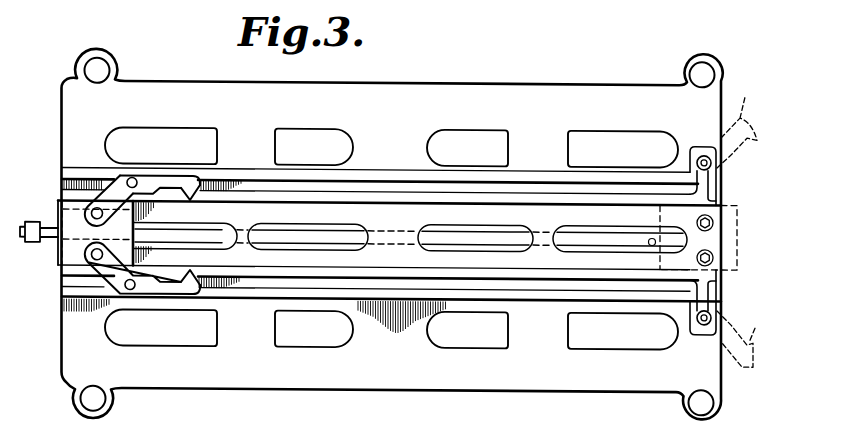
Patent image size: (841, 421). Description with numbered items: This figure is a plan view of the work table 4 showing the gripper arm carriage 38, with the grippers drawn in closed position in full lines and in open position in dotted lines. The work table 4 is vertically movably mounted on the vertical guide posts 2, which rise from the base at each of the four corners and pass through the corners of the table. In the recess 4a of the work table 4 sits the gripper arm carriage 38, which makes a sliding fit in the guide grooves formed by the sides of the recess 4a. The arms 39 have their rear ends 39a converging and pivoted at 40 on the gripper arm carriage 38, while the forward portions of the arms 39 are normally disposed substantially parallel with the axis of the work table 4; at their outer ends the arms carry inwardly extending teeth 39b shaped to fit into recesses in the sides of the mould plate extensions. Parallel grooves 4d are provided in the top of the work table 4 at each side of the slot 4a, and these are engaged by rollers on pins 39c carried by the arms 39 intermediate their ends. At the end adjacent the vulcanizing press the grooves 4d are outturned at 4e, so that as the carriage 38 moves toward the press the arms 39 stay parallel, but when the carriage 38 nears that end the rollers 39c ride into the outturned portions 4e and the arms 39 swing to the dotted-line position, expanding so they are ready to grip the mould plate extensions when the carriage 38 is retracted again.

The vertical guide posts 2 is at (108, 67).
The work table 4 is at (390, 388).
The recess 4a is at (537, 267).
The parallel grooves 4d is at (288, 184).
The outturned portions 4e is at (713, 177).
The gripper arm carriage 38 is at (62, 254).
The gripper arms 39 is at (170, 175).
The rear ends of the arms 39a is at (108, 194).
The inwardly extending teeth 39b is at (184, 271).
The pins with rollers 39c is at (132, 177).
The pivot 40 is at (91, 212).